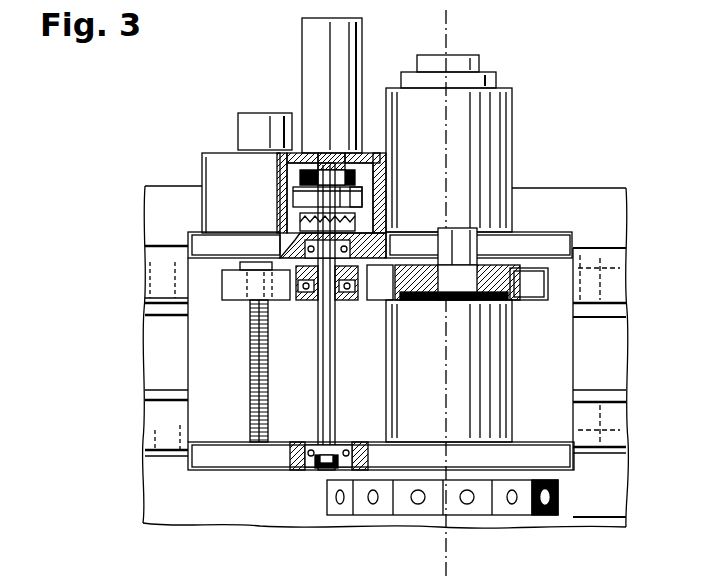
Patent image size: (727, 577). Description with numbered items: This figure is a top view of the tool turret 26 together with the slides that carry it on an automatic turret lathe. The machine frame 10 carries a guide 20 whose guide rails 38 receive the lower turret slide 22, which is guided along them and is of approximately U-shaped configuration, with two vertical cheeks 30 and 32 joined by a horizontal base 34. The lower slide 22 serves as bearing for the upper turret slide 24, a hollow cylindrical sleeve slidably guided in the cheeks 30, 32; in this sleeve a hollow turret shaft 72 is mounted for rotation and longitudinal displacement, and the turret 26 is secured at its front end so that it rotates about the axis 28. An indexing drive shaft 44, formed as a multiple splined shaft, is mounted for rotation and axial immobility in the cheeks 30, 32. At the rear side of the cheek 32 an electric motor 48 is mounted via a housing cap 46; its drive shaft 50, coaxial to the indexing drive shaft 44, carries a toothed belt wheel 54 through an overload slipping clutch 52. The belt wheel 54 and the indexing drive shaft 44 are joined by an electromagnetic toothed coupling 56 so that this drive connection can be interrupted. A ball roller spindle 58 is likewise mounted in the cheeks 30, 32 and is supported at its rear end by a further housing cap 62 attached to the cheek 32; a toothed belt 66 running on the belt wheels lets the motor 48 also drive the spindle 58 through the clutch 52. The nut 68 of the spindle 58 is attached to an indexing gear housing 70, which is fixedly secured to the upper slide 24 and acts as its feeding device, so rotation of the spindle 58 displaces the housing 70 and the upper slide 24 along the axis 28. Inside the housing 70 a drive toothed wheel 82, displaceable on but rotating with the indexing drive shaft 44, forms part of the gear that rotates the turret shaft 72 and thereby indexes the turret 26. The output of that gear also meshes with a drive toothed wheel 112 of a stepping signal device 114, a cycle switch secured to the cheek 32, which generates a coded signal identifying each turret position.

The machine frame 10 is at (146, 180).
The guide 20 is at (598, 228).
The lower turret slide 22 is at (234, 486).
The upper turret slide 24 is at (482, 395).
The tool turret 26 is at (484, 503).
The axis 28 is at (447, 25).
The vertical cheek 30 is at (203, 460).
The vertical cheek 32 is at (218, 238).
The horizontal base 34 is at (197, 363).
The guide rails 38 is at (613, 292).
The indexing drive shaft 44 is at (328, 380).
The housing cap 46 is at (293, 193).
The electric motor 48 is at (313, 43).
The drive shaft 50 is at (328, 150).
The overload slipping clutch 52 is at (283, 173).
The toothed belt wheel 54 is at (376, 193).
The toothed coupling 56 is at (372, 225).
The ball roller spindle 58 is at (252, 390).
The housing cap 62 is at (208, 173).
The toothed belt 66 is at (305, 198).
The nut 68 is at (290, 268).
The indexing gear housing 70 is at (233, 301).
The turret shaft 72 is at (499, 78).
The drive toothed wheel 82 is at (313, 303).
The drive toothed wheel 112 is at (492, 302).
The stepping signal device 114 is at (464, 245).